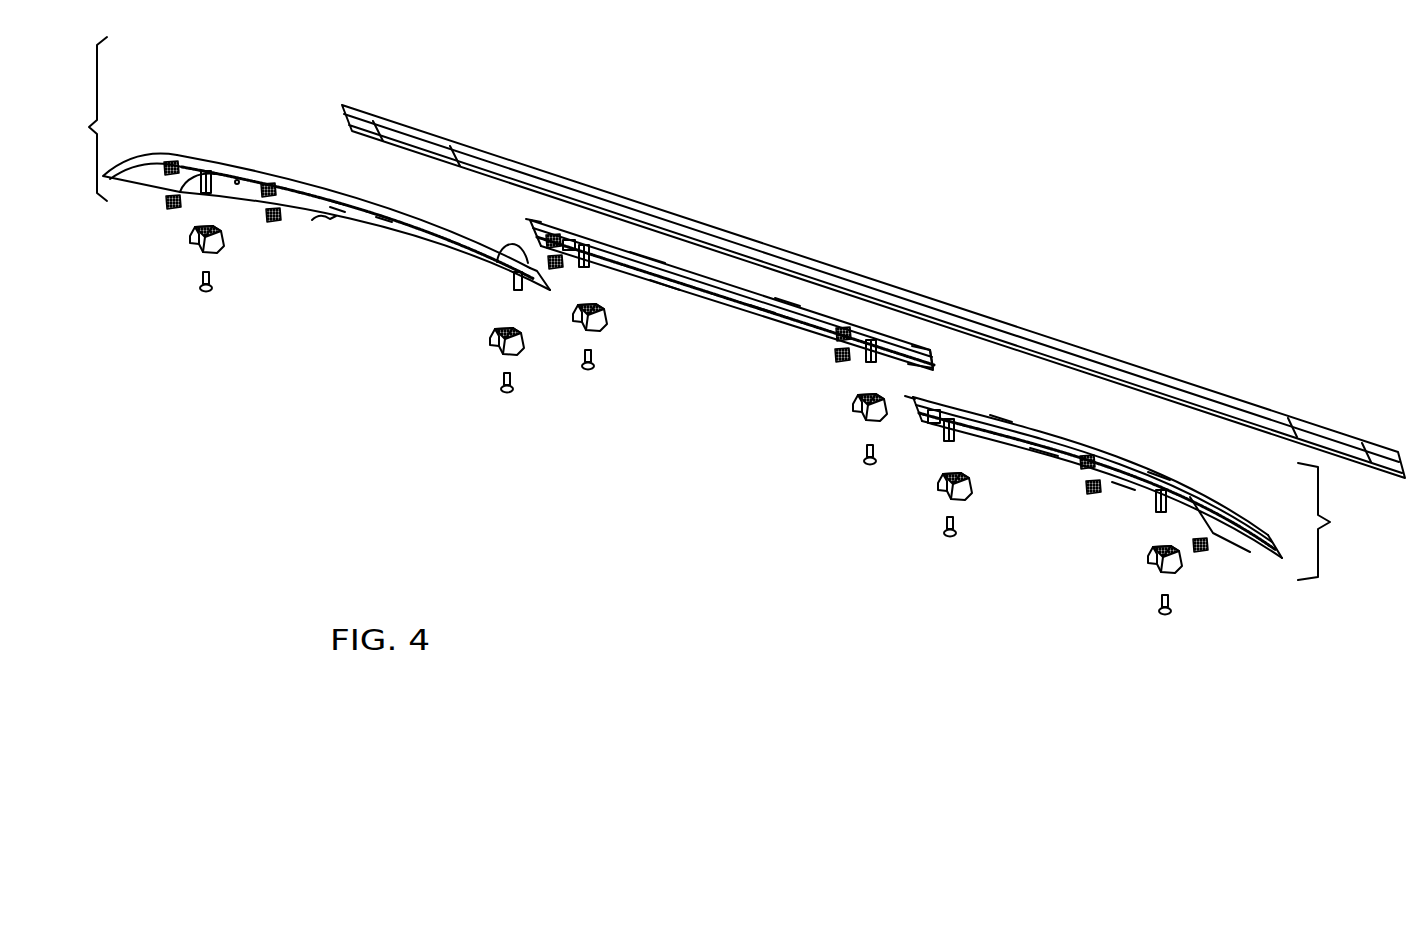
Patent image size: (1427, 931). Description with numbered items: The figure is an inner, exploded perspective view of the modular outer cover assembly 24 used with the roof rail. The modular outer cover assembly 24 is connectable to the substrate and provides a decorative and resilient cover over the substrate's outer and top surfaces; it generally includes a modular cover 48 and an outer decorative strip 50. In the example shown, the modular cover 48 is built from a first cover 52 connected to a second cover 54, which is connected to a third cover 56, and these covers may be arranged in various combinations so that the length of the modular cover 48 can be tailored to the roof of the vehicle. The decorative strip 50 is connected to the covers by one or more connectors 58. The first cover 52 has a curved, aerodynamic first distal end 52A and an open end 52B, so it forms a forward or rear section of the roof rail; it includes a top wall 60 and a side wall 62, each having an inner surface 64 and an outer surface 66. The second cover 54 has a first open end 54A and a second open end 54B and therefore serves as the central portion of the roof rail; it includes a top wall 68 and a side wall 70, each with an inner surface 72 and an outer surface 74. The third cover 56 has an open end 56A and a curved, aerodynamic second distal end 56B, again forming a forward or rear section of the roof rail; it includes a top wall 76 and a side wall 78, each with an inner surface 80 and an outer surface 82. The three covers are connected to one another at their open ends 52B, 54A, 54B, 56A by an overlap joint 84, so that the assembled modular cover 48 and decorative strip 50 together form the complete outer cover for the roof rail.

The modular outer cover assembly 24 is at (84, 119).
The modular cover 48 is at (1333, 521).
The outer decorative strip 50 is at (862, 273).
The first cover 52 is at (330, 206).
The first distal end 52A is at (155, 152).
The open end 52B is at (520, 262).
The second cover 54 is at (725, 282).
The first open end 54A is at (540, 212).
The second open end 54B is at (910, 340).
The third cover 56 is at (1110, 457).
The open end 56A is at (990, 418).
The second distal end 56B is at (1247, 530).
The connector 58 is at (1130, 568).
The top wall 60 is at (383, 218).
The side wall 62 is at (408, 237).
The inner surface 64 is at (330, 218).
The outer surface 66 is at (337, 204).
The top wall 68 is at (647, 255).
The side wall 70 is at (667, 280).
The inner surface 72 is at (765, 308).
The outer surface 74 is at (787, 300).
The top wall 76 is at (1000, 410).
The side wall 78 is at (1043, 450).
The inner surface 80 is at (1122, 482).
The outer surface 82 is at (1158, 475).
The overlap joint 84 is at (560, 300).